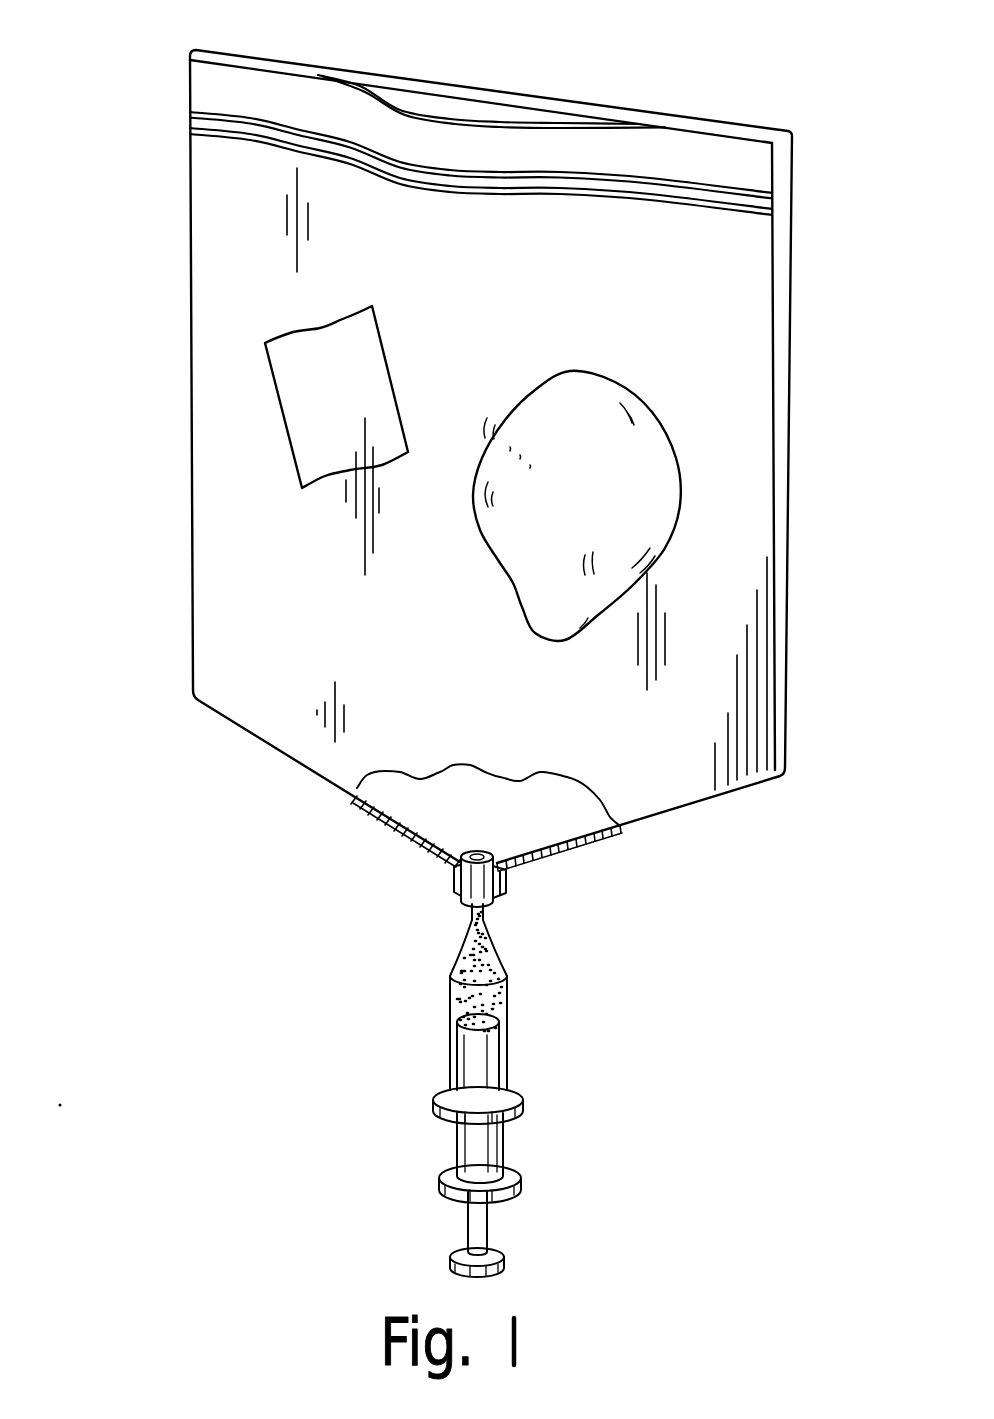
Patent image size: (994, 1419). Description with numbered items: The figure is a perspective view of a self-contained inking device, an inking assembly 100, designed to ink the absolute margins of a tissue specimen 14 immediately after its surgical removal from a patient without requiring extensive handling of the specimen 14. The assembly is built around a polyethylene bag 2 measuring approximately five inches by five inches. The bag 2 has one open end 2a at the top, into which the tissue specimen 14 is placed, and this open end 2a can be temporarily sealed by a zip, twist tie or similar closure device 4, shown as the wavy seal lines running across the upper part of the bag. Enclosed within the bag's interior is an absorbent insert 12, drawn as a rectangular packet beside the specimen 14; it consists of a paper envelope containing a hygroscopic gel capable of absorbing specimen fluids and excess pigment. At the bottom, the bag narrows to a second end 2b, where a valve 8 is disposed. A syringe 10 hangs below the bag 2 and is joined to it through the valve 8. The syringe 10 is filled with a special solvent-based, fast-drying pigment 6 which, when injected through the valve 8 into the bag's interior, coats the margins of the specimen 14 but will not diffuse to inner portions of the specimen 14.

The inking assembly 100 is at (648, 78).
The polyethylene bag 2 is at (205, 177).
The open end 2a is at (430, 98).
The second end 2b is at (530, 857).
The closure device 4 is at (543, 192).
The pigment 6 is at (482, 968).
The valve 8 is at (475, 880).
The syringe 10 is at (475, 1148).
The absorbent insert 12 is at (313, 425).
The tissue specimen 14 is at (582, 447).